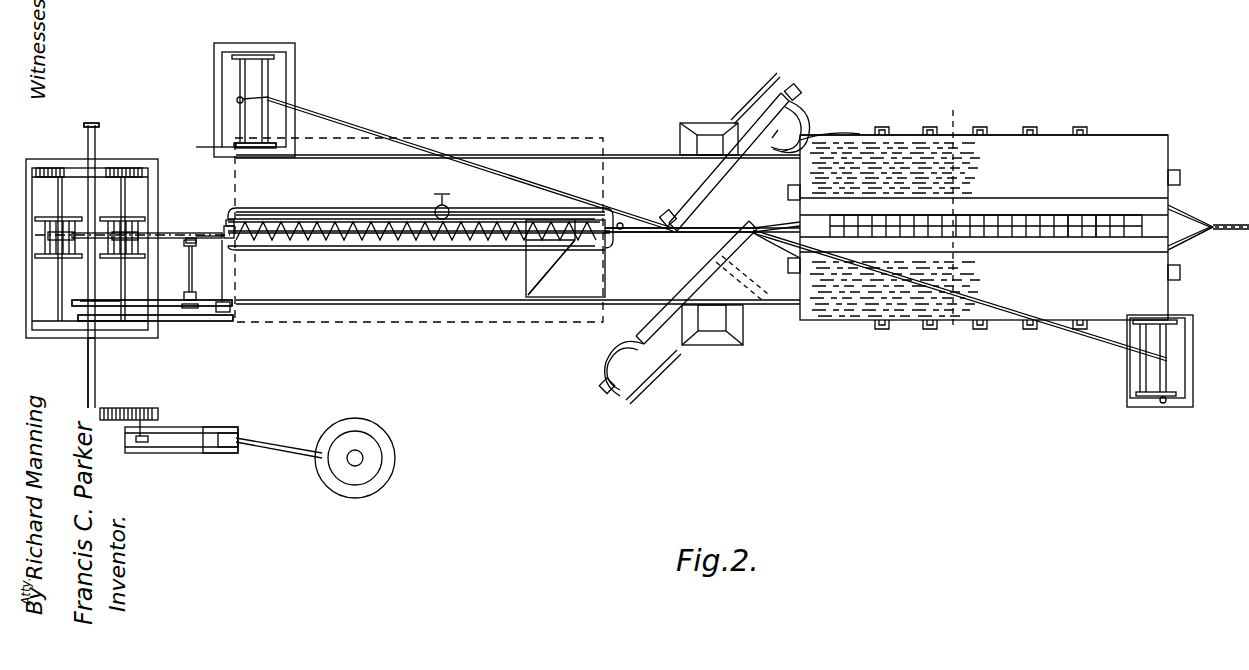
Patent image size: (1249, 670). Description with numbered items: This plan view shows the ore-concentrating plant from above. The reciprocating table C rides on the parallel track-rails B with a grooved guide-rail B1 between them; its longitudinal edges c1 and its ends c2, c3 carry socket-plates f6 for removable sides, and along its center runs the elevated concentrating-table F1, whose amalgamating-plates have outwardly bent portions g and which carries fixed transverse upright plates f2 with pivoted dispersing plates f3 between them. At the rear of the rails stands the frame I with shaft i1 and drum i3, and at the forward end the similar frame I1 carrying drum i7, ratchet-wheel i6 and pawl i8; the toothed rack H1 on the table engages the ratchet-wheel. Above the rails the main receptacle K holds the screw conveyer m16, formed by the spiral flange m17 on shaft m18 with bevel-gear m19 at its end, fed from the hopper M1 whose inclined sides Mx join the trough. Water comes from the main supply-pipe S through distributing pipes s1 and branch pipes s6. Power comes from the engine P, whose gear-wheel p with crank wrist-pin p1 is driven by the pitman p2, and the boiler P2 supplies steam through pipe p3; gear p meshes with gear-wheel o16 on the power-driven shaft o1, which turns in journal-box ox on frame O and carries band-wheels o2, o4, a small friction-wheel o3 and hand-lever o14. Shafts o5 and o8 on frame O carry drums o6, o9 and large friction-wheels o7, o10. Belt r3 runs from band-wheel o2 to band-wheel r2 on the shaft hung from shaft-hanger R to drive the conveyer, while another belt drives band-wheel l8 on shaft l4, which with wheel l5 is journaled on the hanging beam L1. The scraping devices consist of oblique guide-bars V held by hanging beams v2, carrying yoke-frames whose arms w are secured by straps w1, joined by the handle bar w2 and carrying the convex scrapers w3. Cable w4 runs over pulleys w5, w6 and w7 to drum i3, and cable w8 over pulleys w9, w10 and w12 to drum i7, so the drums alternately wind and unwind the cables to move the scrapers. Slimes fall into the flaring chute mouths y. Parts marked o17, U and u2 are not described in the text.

The shaft support frame O is at (152, 330).
The small friction-wheel o3 is at (98, 166).
The hand-lever o14 is at (98, 124).
The large friction-wheel o7 is at (44, 167).
The large friction-wheel o10 is at (126, 167).
The shaft o5 is at (62, 205).
The shaft o8 is at (125, 203).
The drum o6 is at (50, 258).
The drum o9 is at (118, 258).
The rod o17 is at (134, 300).
The band-wheel o2 is at (83, 300).
The band-wheel o4 is at (84, 322).
The journal-box ox is at (100, 340).
The belt r3 is at (200, 308).
The band-wheel r2 is at (228, 322).
The shaft-hanger R is at (232, 304).
The hanging beam L1 is at (147, 244).
The wheel l5 is at (184, 244).
The transverse shaft l4 is at (189, 270).
The band-wheel l8 is at (196, 300).
The gear-wheel o16 is at (100, 410).
The power-driven shaft o1 is at (88, 376).
The gear-wheel p is at (142, 420).
The crank wrist-pin p1 is at (142, 442).
The pitman p2 is at (180, 436).
The engine P is at (230, 426).
The steam-pipe p3 is at (282, 448).
The boiler P2 is at (371, 458).
The shaft-supporting frame I1 is at (286, 72).
The drum i7 is at (255, 101).
The ratchet-wheel i6 is at (209, 141).
The pawl i8 is at (278, 146).
The guide-pulley w12 is at (272, 98).
The cable w8 is at (375, 133).
The main receptacle K is at (418, 247).
The spiral flange m17 is at (366, 222).
The screw conveyer m16 is at (332, 245).
The conveyer shaft m18 is at (286, 222).
The bevel-gear m19 is at (222, 230).
The branch pipe s6 is at (230, 220).
The water-distributing pipe s1 is at (330, 212).
The main supply-pipe S is at (446, 203).
The hopper M1 is at (526, 278).
The hopper side Mx is at (556, 298).
The track-rail B is at (646, 155).
The guide-rail B1 is at (660, 226).
The flaring upper end of chute y is at (704, 123).
The guide-bar V is at (712, 218).
The hanging beam v2 is at (604, 397).
The scraper w3 is at (745, 110).
The strap w1 is at (588, 346).
The arm w is at (584, 382).
The transverse bar w2 is at (785, 150).
The pulley w9 is at (682, 217).
The pulley w10 is at (682, 241).
The guide U is at (718, 248).
The pulley w5 is at (752, 226).
The pulley w6 is at (770, 242).
The table end c2 is at (788, 212).
The reciprocating table C is at (984, 227).
The amalgamating-plate portion g is at (986, 232).
The concentrating-table F1 is at (1010, 214).
The upright plate f2 is at (1062, 214).
The material-dispersing pivoted plate f3 is at (1090, 214).
The socket-plate f6 is at (1030, 126).
The longitudinal edge c1 is at (1092, 135).
The rear table end c3 is at (1170, 162).
The toothed rack H1 is at (846, 136).
The rope u2 is at (1228, 224).
The cable w4 is at (1208, 232).
The pulley w7 is at (1140, 346).
The shaft-supporting frame I is at (1138, 380).
The drum i3 is at (1150, 380).
The shaft i1 is at (1158, 402).